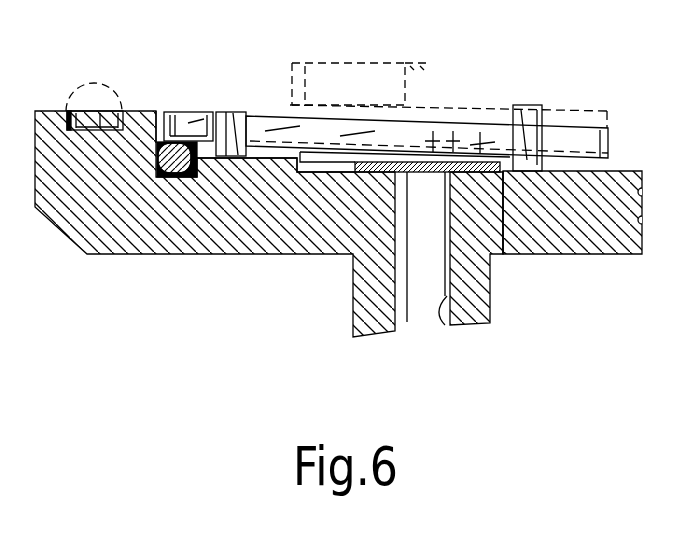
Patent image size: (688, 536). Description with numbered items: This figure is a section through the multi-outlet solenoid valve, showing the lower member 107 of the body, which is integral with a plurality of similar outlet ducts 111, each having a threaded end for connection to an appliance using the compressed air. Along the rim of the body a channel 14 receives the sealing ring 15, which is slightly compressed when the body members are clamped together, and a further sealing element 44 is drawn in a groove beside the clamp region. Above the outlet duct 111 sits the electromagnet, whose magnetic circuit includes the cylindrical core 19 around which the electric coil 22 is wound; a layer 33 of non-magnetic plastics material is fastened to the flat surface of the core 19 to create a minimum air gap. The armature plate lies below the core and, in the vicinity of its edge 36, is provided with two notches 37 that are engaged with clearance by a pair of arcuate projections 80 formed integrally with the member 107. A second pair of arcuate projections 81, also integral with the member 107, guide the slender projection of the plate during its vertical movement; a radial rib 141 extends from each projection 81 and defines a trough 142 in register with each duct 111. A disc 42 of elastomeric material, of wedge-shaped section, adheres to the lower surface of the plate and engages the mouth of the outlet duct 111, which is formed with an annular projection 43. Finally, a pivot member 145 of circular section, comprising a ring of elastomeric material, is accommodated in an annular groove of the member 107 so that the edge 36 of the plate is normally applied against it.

The channel 14 is at (68, 113).
The sealing ring 15 is at (108, 82).
The cylindrical core 19 is at (353, 65).
The electric coil 22 is at (433, 63).
The layer of non-magnetic material 33 is at (296, 63).
The edge 36 is at (180, 111).
The notches 37 is at (266, 116).
The disc 42 is at (342, 172).
The annular projection 43 is at (350, 172).
The O-ring seal 44 is at (197, 180).
The arcuate projections 80 is at (222, 112).
The projections 81 is at (525, 108).
The lower member 107 is at (560, 242).
The outlet duct 111 is at (449, 296).
The radial rib 141 is at (312, 172).
The trough 142 is at (503, 254).
The pivot member 145 is at (157, 140).